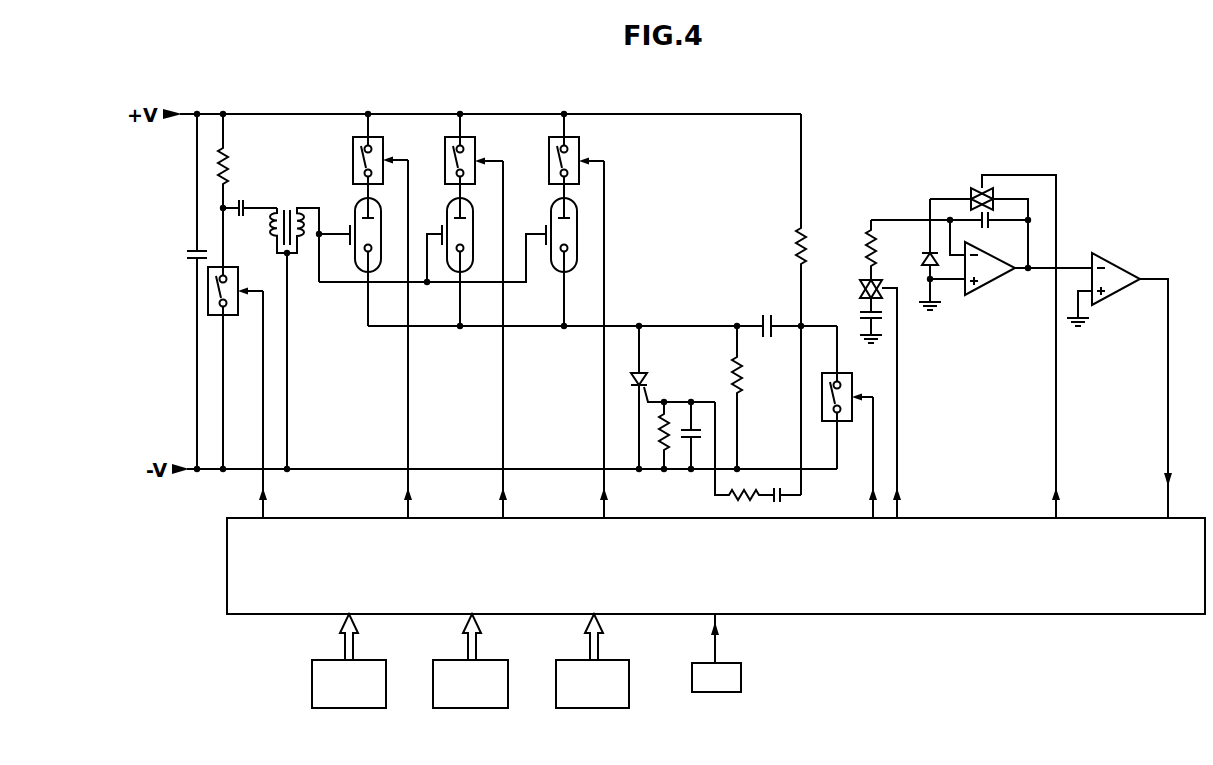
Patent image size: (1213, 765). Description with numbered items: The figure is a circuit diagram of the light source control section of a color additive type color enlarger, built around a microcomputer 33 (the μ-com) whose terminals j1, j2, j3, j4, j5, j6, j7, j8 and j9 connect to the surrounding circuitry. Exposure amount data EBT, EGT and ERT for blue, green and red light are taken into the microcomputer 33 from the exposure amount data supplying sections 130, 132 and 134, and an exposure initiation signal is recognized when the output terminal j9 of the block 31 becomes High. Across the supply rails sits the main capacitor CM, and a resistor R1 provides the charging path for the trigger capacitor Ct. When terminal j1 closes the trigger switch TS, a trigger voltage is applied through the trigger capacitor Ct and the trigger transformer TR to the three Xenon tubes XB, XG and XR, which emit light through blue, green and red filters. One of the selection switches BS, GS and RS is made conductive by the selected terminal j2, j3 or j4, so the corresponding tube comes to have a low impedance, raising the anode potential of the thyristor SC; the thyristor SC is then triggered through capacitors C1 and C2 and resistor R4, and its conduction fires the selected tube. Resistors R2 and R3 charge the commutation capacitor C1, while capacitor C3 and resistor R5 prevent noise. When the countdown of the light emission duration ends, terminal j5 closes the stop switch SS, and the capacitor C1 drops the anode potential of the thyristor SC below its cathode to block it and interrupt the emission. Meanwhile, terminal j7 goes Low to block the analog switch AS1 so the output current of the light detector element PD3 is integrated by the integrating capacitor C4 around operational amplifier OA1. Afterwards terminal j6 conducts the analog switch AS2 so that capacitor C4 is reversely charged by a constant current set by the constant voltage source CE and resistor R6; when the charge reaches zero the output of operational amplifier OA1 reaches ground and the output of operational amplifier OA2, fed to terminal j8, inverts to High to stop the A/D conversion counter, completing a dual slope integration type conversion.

The main capacitor CM is at (190, 254).
The resistor R1 is at (226, 165).
The trigger switch TS is at (235, 312).
The trigger capacitor Ct is at (243, 200).
The trigger transformer TR is at (286, 208).
The selection switch BS is at (352, 150).
The selection switch GS is at (445, 150).
The selection switch RS is at (581, 150).
The blue light Xenon tube XB is at (360, 250).
The green light Xenon tube XG is at (447, 216).
The red light Xenon tube XR is at (551, 216).
The commutation capacitor C1 is at (766, 318).
The resistor R2 is at (797, 246).
The thyristor SC is at (645, 375).
The resistor R5 is at (659, 433).
The capacitor C3 is at (697, 428).
The resistor R3 is at (742, 382).
The resistor R4 is at (728, 497).
The capacitor C2 is at (782, 499).
The stop switch SS is at (849, 380).
The resistor R6 is at (866, 240).
The analog switch AS2 is at (862, 290).
The constant voltage source CE is at (860, 316).
The integrating capacitor C4 is at (989, 229).
The light detector element PD3 is at (921, 262).
The analog switch AS1 is at (970, 196).
The operational amplifier OA1 is at (991, 285).
The operational amplifier OA2 is at (1119, 272).
The terminal j1 is at (273, 404).
The terminal j2 is at (418, 339).
The terminal j3 is at (513, 339).
The terminal j4 is at (614, 339).
The terminal j5 is at (863, 457).
The terminal j6 is at (907, 500).
The terminal j7 is at (1066, 500).
The terminal j8 is at (1178, 492).
The output terminal j9 is at (732, 634).
The microcomputer 33 is at (980, 616).
The blue light exposure amount data supplying section 130 is at (312, 695).
The green light exposure amount data supplying section 132 is at (467, 709).
The red light exposure amount data supplying section 134 is at (596, 709).
The block 31 is at (726, 693).
The blue light exposure amount data EBT is at (379, 626).
The green light exposure amount data EGT is at (503, 626).
The red light exposure amount data ERT is at (623, 626).